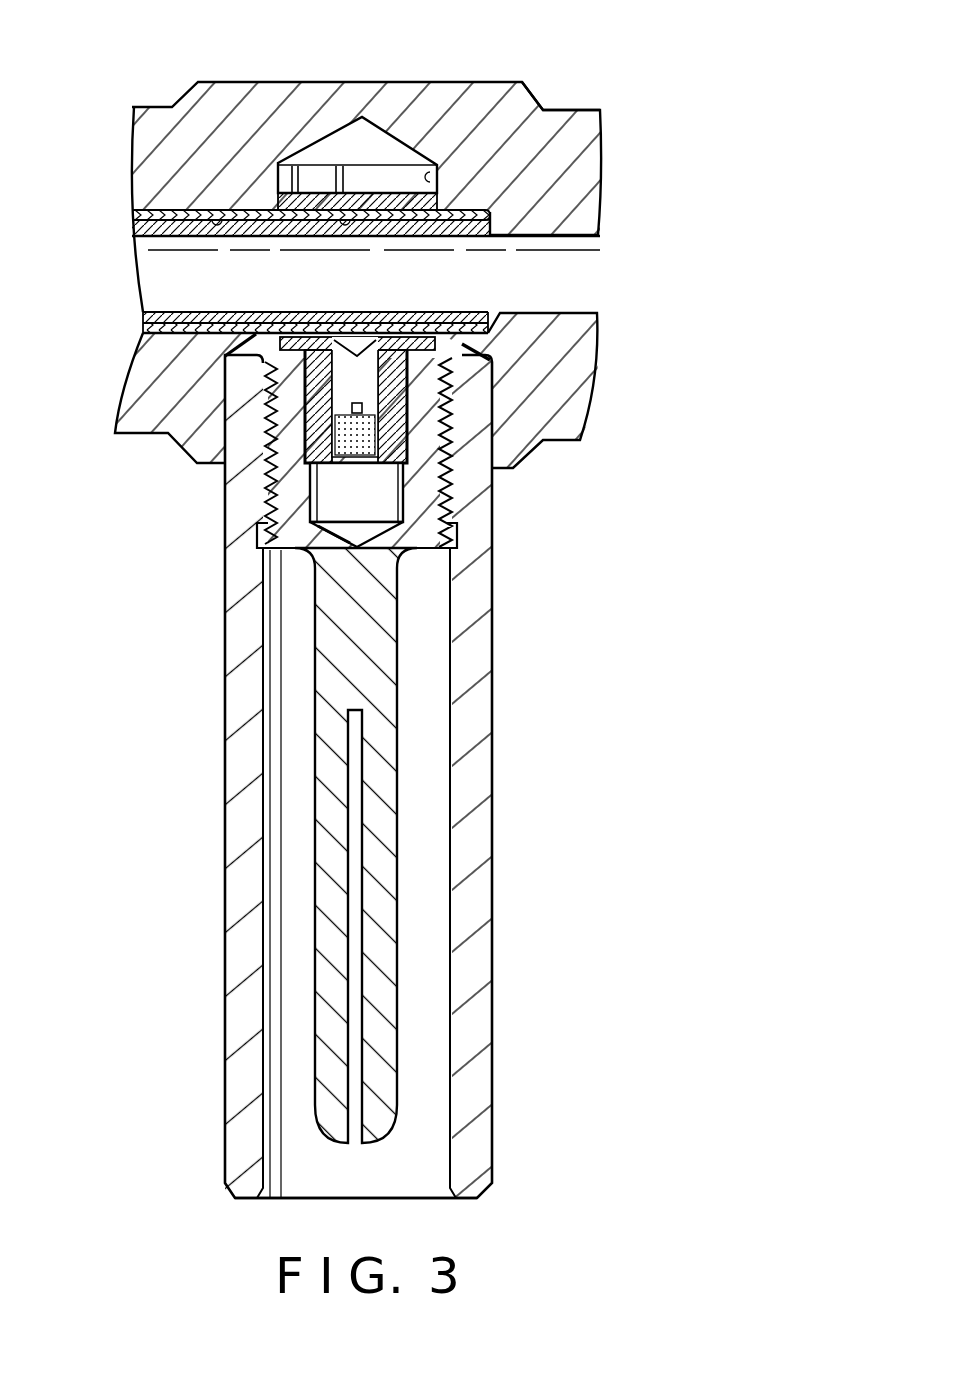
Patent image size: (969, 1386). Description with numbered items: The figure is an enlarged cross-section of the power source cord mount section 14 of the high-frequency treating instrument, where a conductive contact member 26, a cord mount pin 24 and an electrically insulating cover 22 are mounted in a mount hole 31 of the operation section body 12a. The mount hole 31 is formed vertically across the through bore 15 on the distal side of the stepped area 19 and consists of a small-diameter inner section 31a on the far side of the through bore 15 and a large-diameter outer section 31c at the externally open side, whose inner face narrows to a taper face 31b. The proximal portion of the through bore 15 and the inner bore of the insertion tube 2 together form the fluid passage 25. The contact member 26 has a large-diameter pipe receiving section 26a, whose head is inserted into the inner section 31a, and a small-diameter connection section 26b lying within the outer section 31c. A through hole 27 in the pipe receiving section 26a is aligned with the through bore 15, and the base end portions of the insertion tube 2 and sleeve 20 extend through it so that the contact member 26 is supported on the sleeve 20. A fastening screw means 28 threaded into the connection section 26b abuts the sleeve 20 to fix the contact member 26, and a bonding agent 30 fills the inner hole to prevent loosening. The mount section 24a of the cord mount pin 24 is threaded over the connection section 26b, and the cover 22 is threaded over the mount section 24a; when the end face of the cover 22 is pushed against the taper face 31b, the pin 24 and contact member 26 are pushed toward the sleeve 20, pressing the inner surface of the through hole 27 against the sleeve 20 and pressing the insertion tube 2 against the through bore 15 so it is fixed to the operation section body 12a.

The insertion tube 2 is at (165, 228).
The operation section body 12a is at (478, 100).
The power source cord mount section 14 is at (524, 669).
The through bore 15 is at (207, 212).
The stepped area 19 is at (487, 240).
The sleeve 20 is at (175, 215).
The cover 22 is at (478, 787).
The cord mount pin 24 is at (383, 877).
The mount section 24a is at (415, 425).
The fluid passage 25 is at (575, 272).
The contact member 26 is at (317, 218).
The pipe receiving section 26a is at (405, 165).
The connection section 26b is at (405, 472).
The through hole 27 is at (322, 186).
The fastening screw means 28 is at (363, 382).
The bonding agent 30 is at (340, 505).
The mount hole 31 is at (360, 175).
The small-diameter inner section 31a is at (465, 160).
The taper face 31b is at (485, 352).
The large-diameter outer section 31c is at (185, 450).